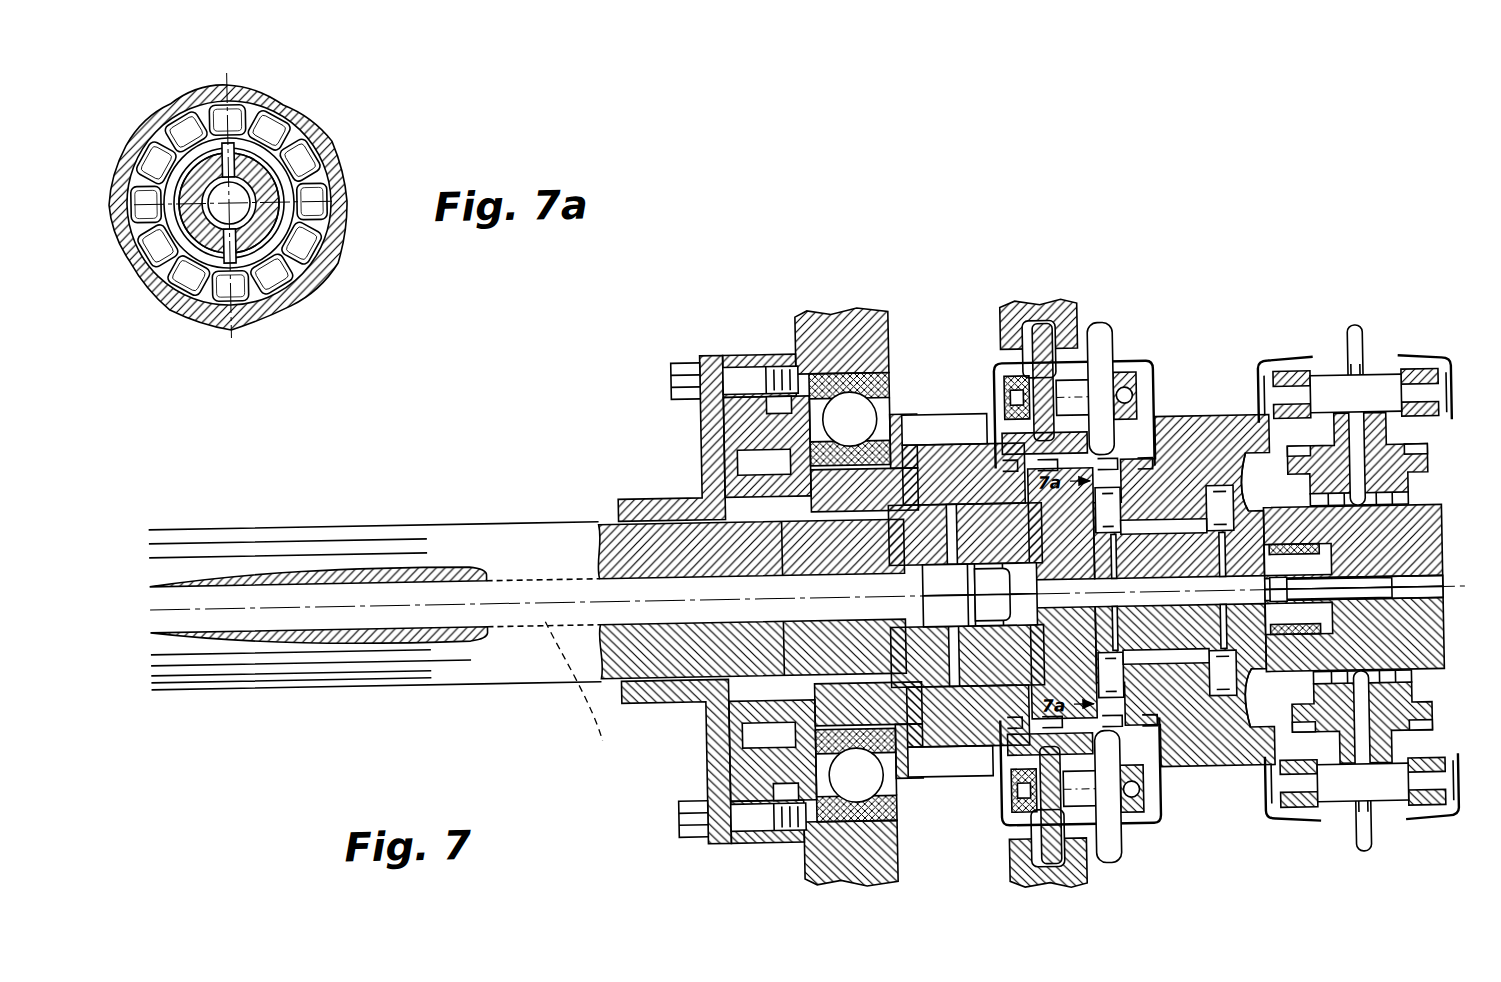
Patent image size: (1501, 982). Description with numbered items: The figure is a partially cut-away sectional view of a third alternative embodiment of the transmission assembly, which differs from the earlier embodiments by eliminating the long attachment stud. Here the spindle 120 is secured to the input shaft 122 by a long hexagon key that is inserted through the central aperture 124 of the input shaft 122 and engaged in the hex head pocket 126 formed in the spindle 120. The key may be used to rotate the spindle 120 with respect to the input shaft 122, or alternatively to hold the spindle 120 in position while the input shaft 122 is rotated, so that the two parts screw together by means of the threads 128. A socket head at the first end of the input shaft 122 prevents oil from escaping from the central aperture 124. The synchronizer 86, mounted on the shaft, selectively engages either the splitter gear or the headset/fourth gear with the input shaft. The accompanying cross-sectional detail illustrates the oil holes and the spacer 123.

In FIG. 7, the synchronizer 86 is at (1025, 290).
In FIG. 7, the spindle 120 is at (1244, 500).
In FIG. 7, the input shaft 122 is at (682, 660).
In FIG. 7A, the spacer 123 is at (273, 204).
In FIG. 7, the central aperture 124 is at (584, 696).
In FIG. 7, the hex head pocket 126 is at (992, 578).
In FIG. 7, the threads 128 is at (992, 622).